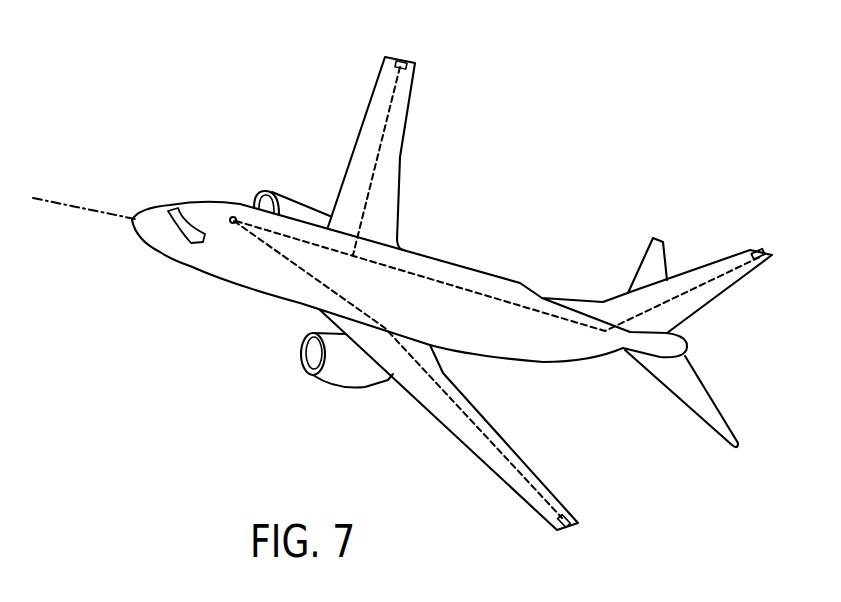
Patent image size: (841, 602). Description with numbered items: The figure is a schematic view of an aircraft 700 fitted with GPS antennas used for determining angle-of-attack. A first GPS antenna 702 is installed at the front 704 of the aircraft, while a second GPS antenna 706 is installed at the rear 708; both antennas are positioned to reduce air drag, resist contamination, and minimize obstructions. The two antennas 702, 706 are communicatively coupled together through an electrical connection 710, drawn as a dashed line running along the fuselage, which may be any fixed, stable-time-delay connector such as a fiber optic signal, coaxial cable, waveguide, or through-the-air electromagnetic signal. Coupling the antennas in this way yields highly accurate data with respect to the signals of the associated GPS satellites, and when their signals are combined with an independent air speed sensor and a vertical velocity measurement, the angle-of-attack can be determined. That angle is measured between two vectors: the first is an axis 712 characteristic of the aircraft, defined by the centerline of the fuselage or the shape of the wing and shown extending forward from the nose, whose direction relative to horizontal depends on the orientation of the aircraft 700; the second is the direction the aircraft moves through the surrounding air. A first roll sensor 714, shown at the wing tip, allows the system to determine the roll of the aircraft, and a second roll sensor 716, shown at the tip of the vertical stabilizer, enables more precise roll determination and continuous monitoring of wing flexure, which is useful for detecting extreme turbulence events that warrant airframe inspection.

The aircraft 700 is at (650, 106).
The first GPS antenna 702 is at (230, 219).
The front 704 is at (152, 250).
The second GPS antenna 706 is at (758, 250).
The rear 708 is at (722, 297).
The electrical connection 710 is at (422, 279).
The axis 712 is at (83, 207).
The first roll sensor 714 is at (563, 518).
The second roll sensor 716 is at (400, 62).